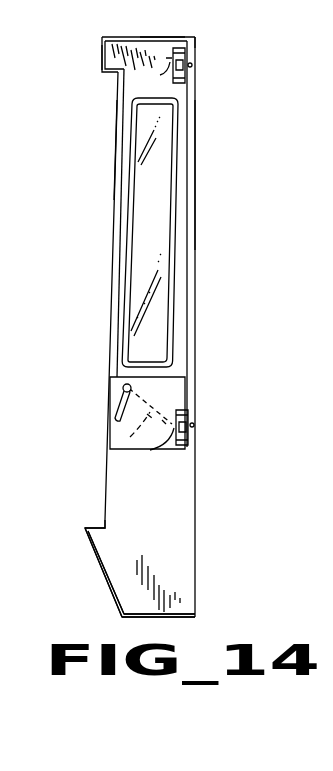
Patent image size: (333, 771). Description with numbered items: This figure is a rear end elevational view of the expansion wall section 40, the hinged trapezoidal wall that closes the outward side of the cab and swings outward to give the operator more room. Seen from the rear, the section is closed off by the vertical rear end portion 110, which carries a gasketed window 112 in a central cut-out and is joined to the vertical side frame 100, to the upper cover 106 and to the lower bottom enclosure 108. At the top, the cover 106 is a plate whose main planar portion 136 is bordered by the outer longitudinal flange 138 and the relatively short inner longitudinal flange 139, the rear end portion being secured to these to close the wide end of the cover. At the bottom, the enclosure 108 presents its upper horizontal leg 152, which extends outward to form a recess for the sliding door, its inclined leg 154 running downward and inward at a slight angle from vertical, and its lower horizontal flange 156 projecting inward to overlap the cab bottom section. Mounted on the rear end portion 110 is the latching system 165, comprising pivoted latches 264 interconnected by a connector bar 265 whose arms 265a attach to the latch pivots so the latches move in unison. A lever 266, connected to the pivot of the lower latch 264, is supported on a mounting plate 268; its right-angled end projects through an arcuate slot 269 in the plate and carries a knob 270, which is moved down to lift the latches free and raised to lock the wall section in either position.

The vertical side frame 100 is at (198, 472).
The upper cover 106 is at (127, 38).
The main planar portion 136 is at (165, 37).
The outer longitudinal flange 138 is at (101, 59).
The inner longitudinal flange 139 is at (197, 42).
The connector bar 265 is at (196, 113).
The arms 265a is at (186, 77).
The pivoted latch 264 is at (162, 66).
The latching system 165 is at (198, 163).
The expansion wall section 40 is at (114, 163).
The vertical rear end portion 110 is at (118, 243).
The window 112 is at (140, 213).
The lever 266 is at (114, 443).
The mounting plate 268 is at (121, 386).
The arcuate slot 269 is at (117, 412).
The knob 270 is at (119, 396).
The upper horizontal leg 152 is at (100, 530).
The lower bottom enclosure 108 is at (104, 575).
The inclined leg 154 is at (113, 599).
The lower horizontal flange 156 is at (190, 617).